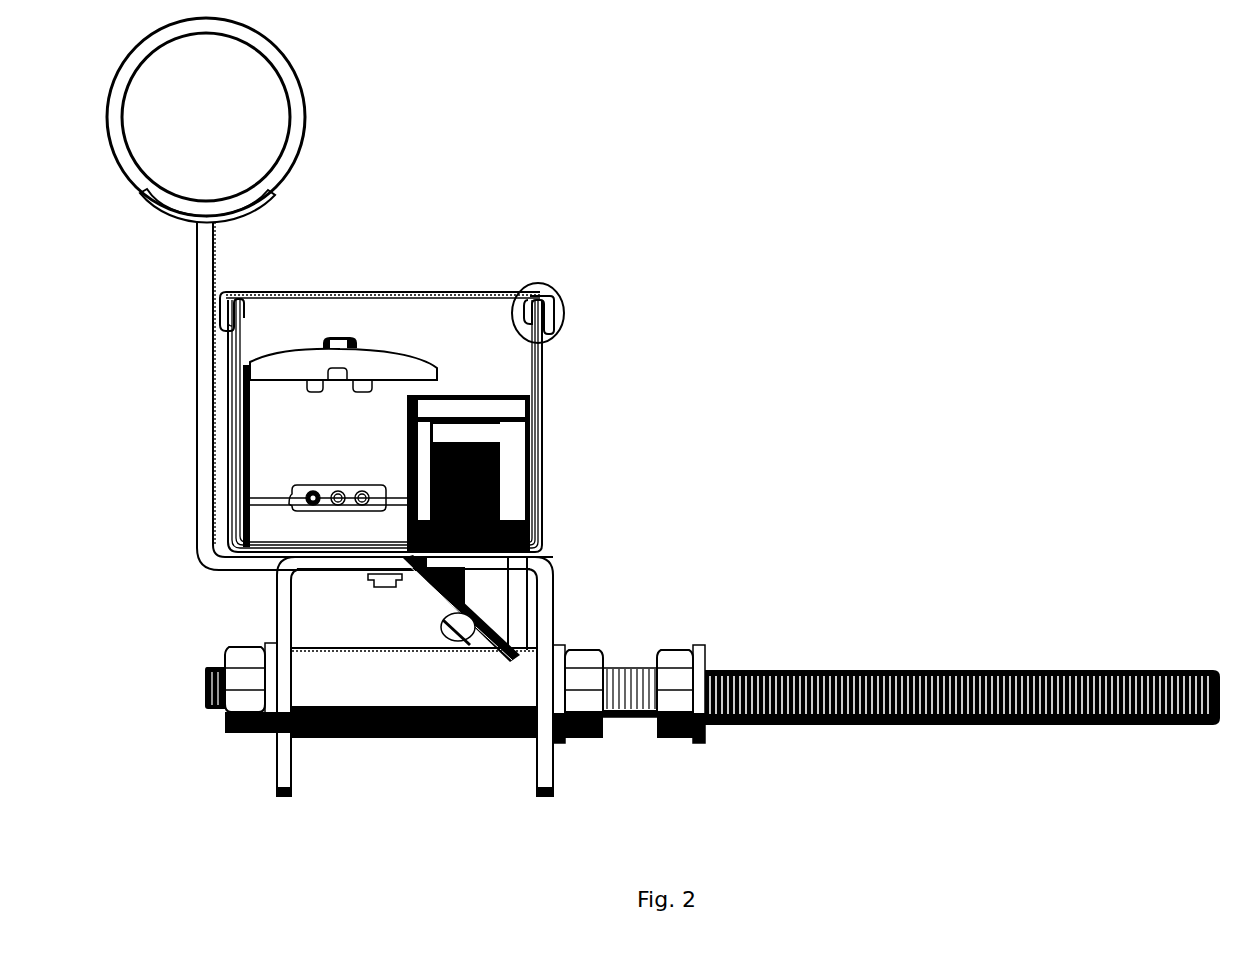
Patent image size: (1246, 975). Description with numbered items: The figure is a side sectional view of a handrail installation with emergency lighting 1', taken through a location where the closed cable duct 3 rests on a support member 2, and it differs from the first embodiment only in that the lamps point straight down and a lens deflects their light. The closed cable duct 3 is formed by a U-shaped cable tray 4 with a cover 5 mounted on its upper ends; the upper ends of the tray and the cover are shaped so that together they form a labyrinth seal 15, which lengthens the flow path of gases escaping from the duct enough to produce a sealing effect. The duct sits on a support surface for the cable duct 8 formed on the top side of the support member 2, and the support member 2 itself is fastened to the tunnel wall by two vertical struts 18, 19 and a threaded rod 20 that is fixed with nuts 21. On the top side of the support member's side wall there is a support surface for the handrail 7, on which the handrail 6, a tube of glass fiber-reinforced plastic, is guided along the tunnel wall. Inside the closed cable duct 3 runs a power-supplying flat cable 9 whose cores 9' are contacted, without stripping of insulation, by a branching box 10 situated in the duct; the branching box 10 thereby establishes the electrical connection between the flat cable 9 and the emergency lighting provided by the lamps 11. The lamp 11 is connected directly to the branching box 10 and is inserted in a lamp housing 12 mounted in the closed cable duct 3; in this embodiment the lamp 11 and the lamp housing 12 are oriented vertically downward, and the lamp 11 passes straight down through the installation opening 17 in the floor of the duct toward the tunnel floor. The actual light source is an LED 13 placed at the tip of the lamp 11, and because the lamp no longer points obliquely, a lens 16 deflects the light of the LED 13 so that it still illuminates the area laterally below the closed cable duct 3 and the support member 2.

The handrail installation with emergency lighting 1' is at (683, 189).
The support member 2 is at (180, 478).
The closed cable duct 3 is at (562, 443).
The U-shaped cable tray 4 is at (539, 448).
The cover 5 is at (445, 294).
The handrail 6 is at (297, 117).
The support surface for the handrail 7 is at (247, 212).
The support surface for the cable duct 8 is at (347, 565).
The flat cable 9 is at (328, 470).
The cores 9' is at (351, 467).
The branching box 10 is at (276, 402).
The lamp 11 is at (535, 534).
The lamp housing 12 is at (468, 408).
The LED 13 is at (440, 607).
The labyrinth seal 15 is at (564, 313).
The lens 16 is at (441, 627).
The installation opening 17 is at (465, 560).
The vertical strut 18 is at (282, 760).
The vertical strut 19 is at (547, 767).
The threaded rod 20 is at (405, 738).
The nut 21 is at (677, 660).